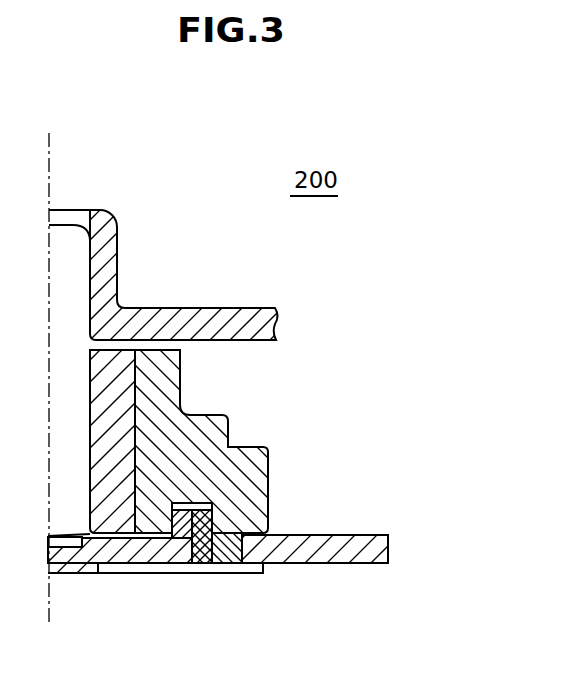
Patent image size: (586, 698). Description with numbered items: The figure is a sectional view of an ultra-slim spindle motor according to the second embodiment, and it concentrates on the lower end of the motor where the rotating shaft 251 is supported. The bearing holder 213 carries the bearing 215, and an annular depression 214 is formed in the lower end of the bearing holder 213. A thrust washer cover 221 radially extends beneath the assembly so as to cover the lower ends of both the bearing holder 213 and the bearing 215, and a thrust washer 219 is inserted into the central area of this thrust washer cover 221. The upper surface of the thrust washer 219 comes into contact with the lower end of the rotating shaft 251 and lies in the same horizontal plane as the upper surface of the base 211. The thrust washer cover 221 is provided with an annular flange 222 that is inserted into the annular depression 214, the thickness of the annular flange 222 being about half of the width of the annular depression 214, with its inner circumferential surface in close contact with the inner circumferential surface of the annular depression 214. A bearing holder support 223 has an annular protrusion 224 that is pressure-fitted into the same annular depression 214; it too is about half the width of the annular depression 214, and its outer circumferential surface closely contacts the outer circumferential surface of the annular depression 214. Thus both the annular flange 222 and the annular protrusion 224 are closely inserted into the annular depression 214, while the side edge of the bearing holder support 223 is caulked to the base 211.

The base 211 is at (321, 563).
The bearing holder 213 is at (232, 469).
The annular depression 214 is at (207, 513).
The bearing 215 is at (115, 382).
The thrust washer 219 is at (65, 542).
The thrust washer cover 221 is at (118, 565).
The annular flange 222 is at (178, 535).
The bearing holder support 223 is at (230, 553).
The annular protrusion 224 is at (203, 528).
The rotating shaft 251 is at (69, 242).